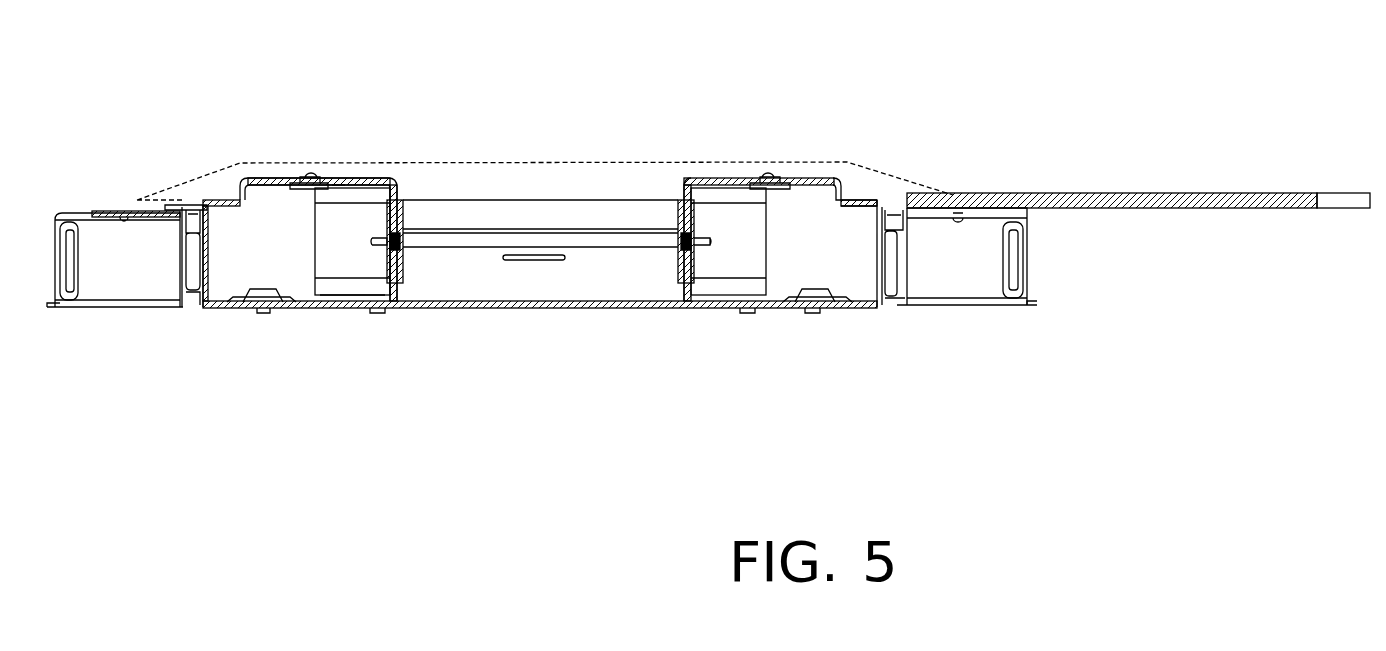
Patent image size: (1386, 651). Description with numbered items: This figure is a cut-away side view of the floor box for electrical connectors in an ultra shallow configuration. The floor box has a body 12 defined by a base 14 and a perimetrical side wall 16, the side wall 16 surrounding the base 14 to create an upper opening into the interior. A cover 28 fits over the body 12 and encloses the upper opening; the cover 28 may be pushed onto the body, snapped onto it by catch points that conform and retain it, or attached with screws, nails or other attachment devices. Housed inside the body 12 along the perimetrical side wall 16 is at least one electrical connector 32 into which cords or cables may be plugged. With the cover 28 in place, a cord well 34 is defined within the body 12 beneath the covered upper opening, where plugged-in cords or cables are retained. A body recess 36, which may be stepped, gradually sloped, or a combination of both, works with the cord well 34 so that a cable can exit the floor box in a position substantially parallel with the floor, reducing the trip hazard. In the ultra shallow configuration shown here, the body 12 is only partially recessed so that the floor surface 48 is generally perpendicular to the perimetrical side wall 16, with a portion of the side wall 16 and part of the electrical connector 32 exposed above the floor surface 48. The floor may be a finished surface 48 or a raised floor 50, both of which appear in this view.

The body 12 is at (197, 205).
The base 14 is at (590, 308).
The perimetrical side wall 16 is at (877, 250).
The cover 28 is at (500, 162).
The electrical connector 32 is at (272, 247).
The cord well 34 is at (450, 270).
The body recess 36 is at (582, 213).
The finished surface of the floor 48 is at (1063, 193).
The raised floor 50 is at (110, 265).